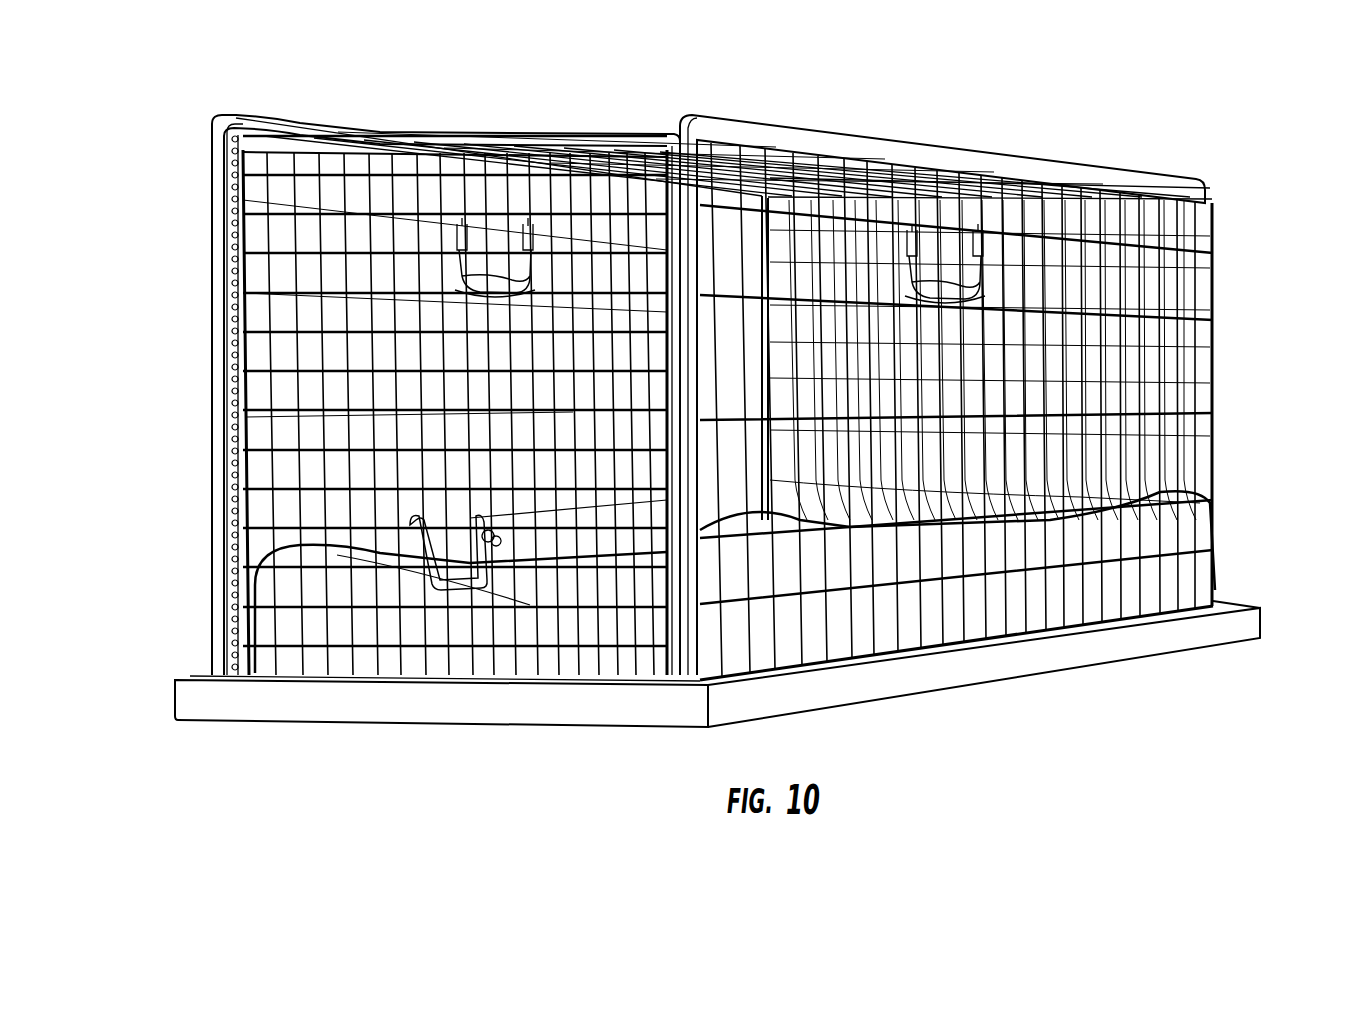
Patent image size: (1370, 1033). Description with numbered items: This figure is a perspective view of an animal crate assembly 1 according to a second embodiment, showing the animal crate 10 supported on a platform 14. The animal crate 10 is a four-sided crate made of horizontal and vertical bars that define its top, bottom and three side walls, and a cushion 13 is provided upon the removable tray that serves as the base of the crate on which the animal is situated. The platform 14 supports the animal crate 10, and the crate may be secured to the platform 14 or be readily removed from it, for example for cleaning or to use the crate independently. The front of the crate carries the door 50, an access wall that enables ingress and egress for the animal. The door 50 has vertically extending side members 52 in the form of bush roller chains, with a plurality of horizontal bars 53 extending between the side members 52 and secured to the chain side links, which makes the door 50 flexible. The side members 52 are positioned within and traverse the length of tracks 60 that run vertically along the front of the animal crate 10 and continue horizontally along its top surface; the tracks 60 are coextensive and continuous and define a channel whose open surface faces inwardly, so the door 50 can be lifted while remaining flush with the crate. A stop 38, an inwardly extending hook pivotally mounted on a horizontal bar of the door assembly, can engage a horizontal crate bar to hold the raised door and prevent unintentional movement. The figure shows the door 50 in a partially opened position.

The animal crate assembly 1 is at (1215, 126).
The animal crate 10 is at (1182, 410).
The cushion 13 is at (415, 625).
The platform 14 is at (930, 675).
The stop 38 is at (458, 587).
The door 50 is at (235, 187).
The side members 52 is at (232, 353).
The horizontal bars 53 is at (236, 466).
The tracks 60 is at (218, 112).